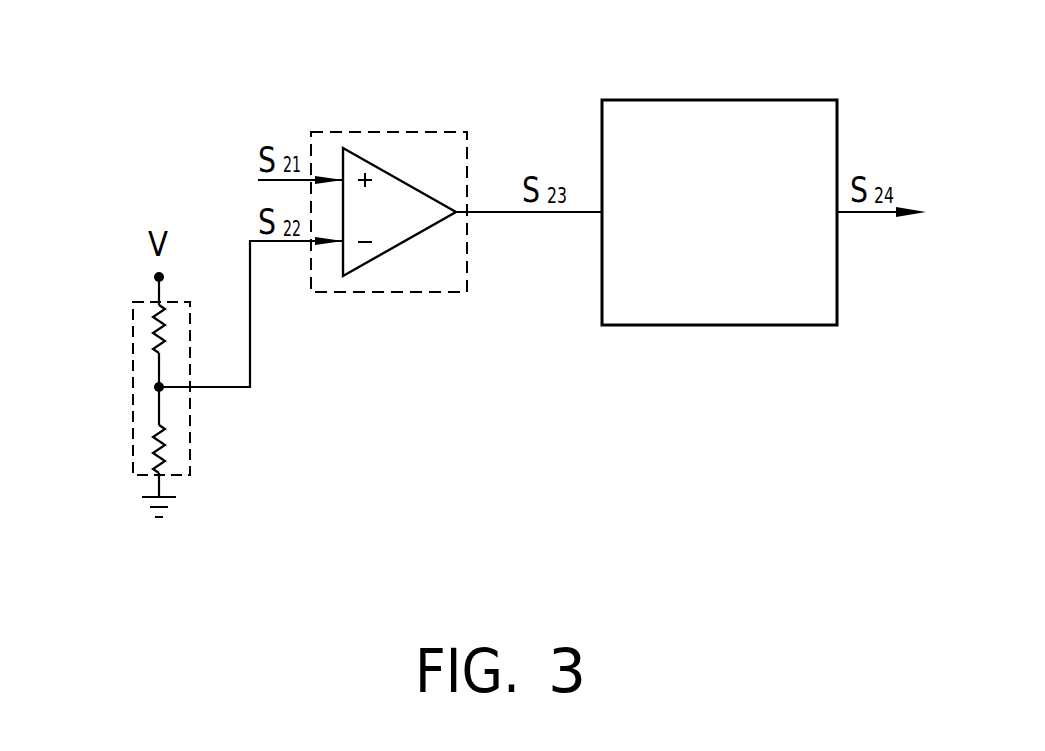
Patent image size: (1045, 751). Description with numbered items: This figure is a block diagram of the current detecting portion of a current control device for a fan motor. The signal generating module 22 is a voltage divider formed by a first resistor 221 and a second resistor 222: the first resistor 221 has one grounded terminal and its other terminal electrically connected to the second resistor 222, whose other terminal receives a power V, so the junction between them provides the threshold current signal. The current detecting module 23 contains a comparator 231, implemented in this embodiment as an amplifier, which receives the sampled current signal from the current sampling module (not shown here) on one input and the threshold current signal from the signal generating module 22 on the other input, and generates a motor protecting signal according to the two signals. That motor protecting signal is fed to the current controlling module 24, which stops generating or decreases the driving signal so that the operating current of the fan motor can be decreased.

The signal generating module 22 is at (159, 388).
The first resistor 221 is at (146, 452).
The second resistor 222 is at (146, 334).
The current detecting module 23 is at (389, 216).
The comparator 231 is at (350, 262).
The current controlling module 24 is at (706, 106).